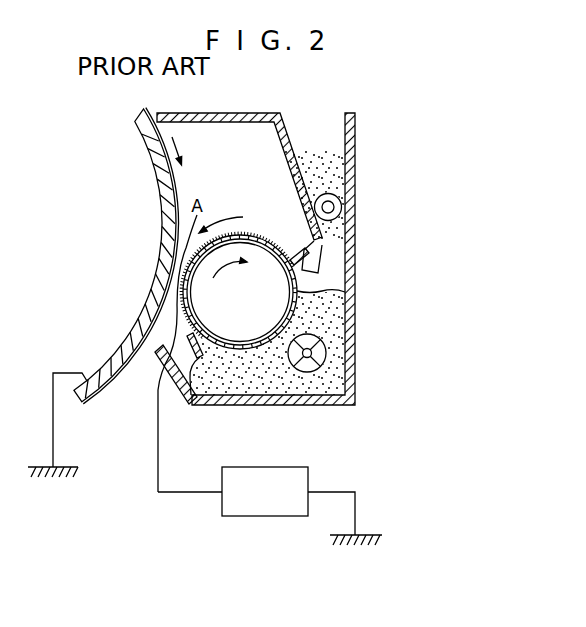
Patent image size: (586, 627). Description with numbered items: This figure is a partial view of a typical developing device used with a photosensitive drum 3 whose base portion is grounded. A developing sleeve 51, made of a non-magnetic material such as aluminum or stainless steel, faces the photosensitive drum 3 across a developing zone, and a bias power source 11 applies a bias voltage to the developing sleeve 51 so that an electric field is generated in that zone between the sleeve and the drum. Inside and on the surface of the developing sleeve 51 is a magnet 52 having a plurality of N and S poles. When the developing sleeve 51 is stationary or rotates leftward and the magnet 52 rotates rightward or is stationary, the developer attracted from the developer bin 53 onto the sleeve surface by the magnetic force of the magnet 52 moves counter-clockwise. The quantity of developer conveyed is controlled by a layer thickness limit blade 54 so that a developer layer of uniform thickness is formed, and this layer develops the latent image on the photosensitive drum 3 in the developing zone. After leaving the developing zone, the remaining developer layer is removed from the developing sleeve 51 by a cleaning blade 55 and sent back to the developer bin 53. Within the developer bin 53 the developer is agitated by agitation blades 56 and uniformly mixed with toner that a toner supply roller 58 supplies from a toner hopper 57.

The photosensitive drum 3 is at (108, 388).
The bias power source 11 is at (272, 516).
The developing sleeve 51 is at (257, 348).
The magnet 52 is at (241, 346).
The developer bin 53 is at (332, 385).
The layer thickness limit blade 54 is at (302, 252).
The cleaning blade 55 is at (192, 403).
The agitation blades 56 is at (326, 352).
The toner hopper 57 is at (320, 148).
The toner supply roller 58 is at (341, 207).